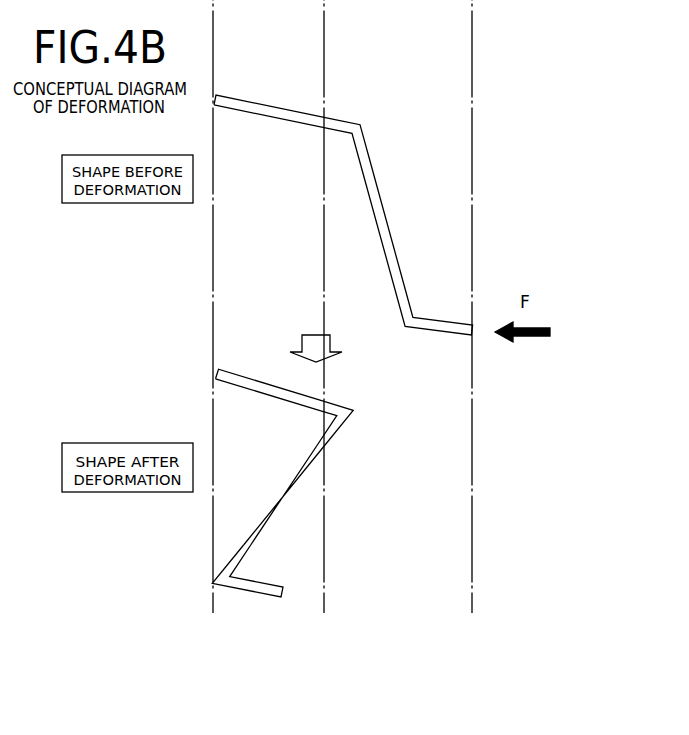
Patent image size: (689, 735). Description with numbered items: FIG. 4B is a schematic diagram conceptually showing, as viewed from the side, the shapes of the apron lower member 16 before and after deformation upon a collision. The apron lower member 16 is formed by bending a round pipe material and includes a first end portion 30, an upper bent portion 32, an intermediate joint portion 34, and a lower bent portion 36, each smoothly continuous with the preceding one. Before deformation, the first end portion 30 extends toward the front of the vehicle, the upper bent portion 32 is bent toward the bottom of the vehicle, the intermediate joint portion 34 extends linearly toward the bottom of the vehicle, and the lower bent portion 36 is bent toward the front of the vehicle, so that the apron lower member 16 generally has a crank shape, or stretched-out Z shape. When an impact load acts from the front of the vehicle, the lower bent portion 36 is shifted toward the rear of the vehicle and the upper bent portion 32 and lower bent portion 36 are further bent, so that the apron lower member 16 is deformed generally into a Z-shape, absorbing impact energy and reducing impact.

The apron lower member 16 is at (342, 351).
The first end portion 30 is at (265, 110).
The upper bent portion 32 is at (350, 135).
The intermediate joint portion 34 is at (380, 205).
The lower bent portion 36 is at (417, 317).